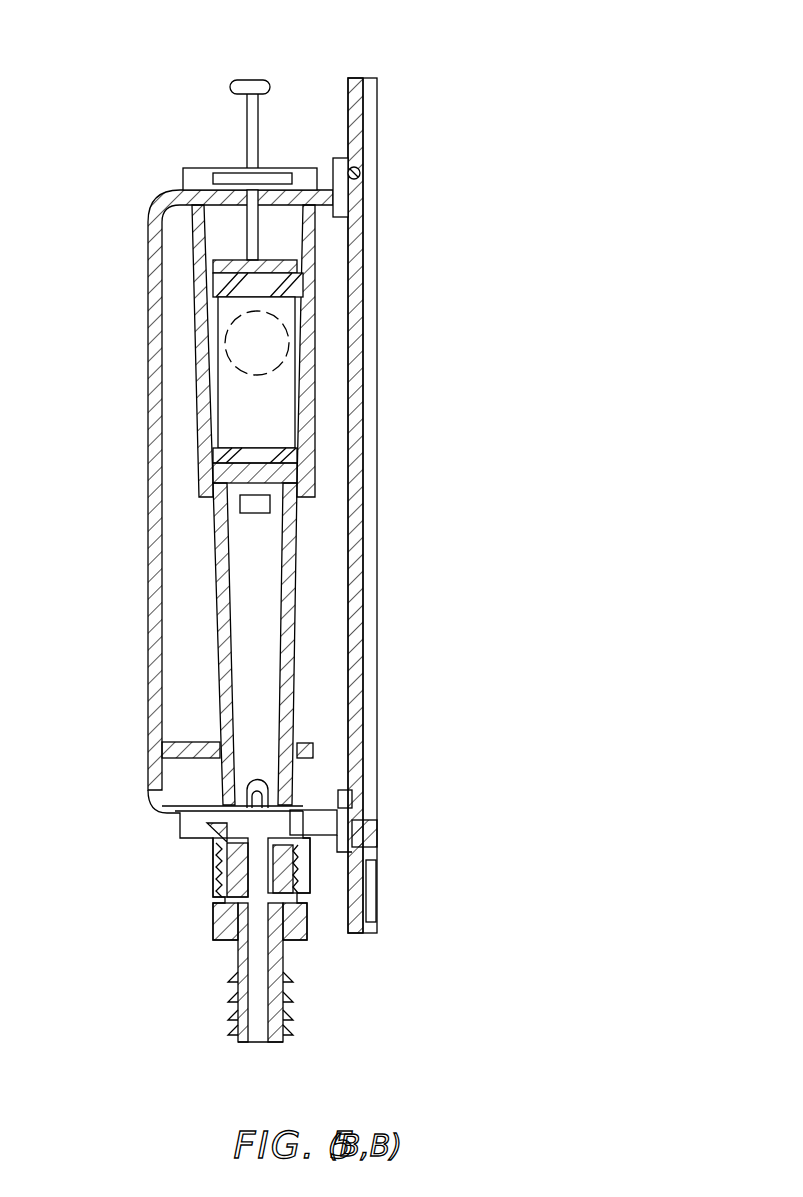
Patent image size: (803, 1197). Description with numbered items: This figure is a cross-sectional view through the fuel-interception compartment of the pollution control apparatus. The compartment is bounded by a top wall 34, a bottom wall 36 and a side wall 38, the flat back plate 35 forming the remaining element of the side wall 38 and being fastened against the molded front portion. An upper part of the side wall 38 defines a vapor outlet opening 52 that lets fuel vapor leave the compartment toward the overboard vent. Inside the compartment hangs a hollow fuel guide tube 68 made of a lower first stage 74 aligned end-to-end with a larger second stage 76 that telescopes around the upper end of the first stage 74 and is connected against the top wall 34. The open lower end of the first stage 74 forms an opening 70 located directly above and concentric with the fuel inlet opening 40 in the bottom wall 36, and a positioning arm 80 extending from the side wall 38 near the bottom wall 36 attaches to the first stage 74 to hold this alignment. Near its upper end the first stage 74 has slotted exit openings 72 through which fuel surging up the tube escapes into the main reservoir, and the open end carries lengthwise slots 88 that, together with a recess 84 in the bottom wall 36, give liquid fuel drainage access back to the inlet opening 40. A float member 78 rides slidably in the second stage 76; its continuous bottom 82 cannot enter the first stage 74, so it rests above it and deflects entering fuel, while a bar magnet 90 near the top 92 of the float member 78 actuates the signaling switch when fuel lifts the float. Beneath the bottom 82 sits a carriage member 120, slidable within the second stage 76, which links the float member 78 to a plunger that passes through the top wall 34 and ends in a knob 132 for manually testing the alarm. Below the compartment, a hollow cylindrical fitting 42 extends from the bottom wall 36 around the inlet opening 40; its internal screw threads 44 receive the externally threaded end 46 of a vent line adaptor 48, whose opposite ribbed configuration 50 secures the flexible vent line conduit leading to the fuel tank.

The knob 132 is at (260, 78).
The top wall 34 is at (330, 187).
The side wall 38 is at (158, 636).
The back plate 35 is at (150, 690).
The fuel guide tube 68 is at (193, 270).
The second stage 76 is at (197, 367).
The bar magnet 90 is at (268, 260).
The top of float member 92 is at (213, 287).
The float member 78 is at (225, 398).
The vapor outlet opening 52 is at (280, 340).
The bottom of float member 82 is at (242, 450).
The carriage member 120 is at (213, 470).
The exit openings 72 is at (283, 512).
The first stage 74 is at (300, 570).
The positioning arm 80 is at (195, 740).
The slots 88 is at (255, 782).
The guide tube opening 70 is at (270, 812).
The recess 84 is at (147, 803).
The bottom wall 36 is at (207, 842).
The cylindrical fitting 42 is at (210, 870).
The screw threads 44 is at (225, 902).
The vent line adaptor 48 is at (220, 948).
The fuel inlet opening 40 is at (312, 840).
The externally threaded end 46 is at (305, 935).
The multiple ribbed configuration 50 is at (237, 1030).